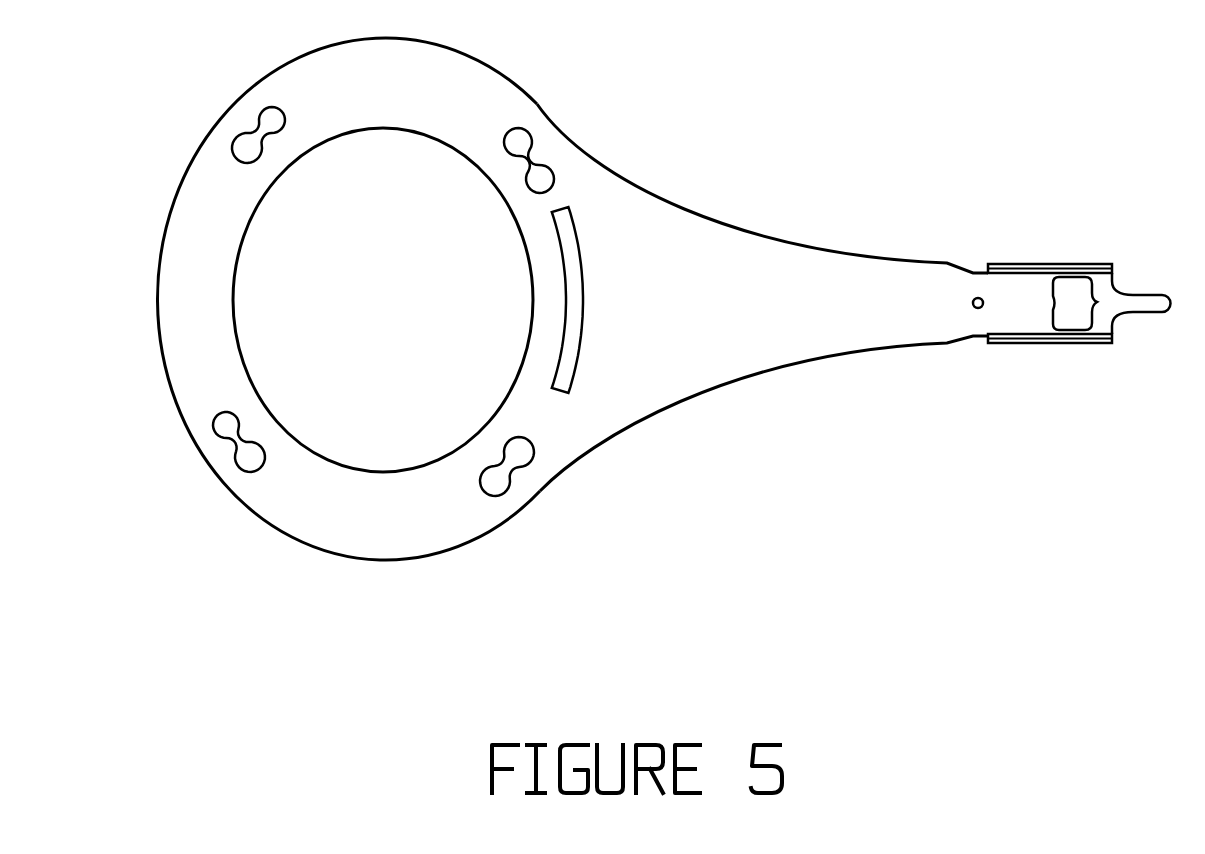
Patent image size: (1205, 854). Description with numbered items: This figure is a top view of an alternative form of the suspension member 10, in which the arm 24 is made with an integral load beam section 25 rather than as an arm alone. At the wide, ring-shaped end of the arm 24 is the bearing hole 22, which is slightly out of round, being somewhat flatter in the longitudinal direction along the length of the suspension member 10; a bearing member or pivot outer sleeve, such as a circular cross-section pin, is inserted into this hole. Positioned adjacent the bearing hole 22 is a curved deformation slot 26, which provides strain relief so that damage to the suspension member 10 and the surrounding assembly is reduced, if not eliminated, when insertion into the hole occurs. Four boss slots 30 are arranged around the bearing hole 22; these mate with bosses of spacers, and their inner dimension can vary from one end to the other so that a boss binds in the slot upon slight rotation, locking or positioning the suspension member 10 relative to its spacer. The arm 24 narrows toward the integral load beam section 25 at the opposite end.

The suspension member 10 is at (664, 352).
The bearing hole 22 is at (415, 400).
The arm 24 is at (715, 352).
The integral load beam section 25 is at (1008, 312).
The curved deformation slot 26 is at (572, 258).
The boss slots 30 is at (522, 455).